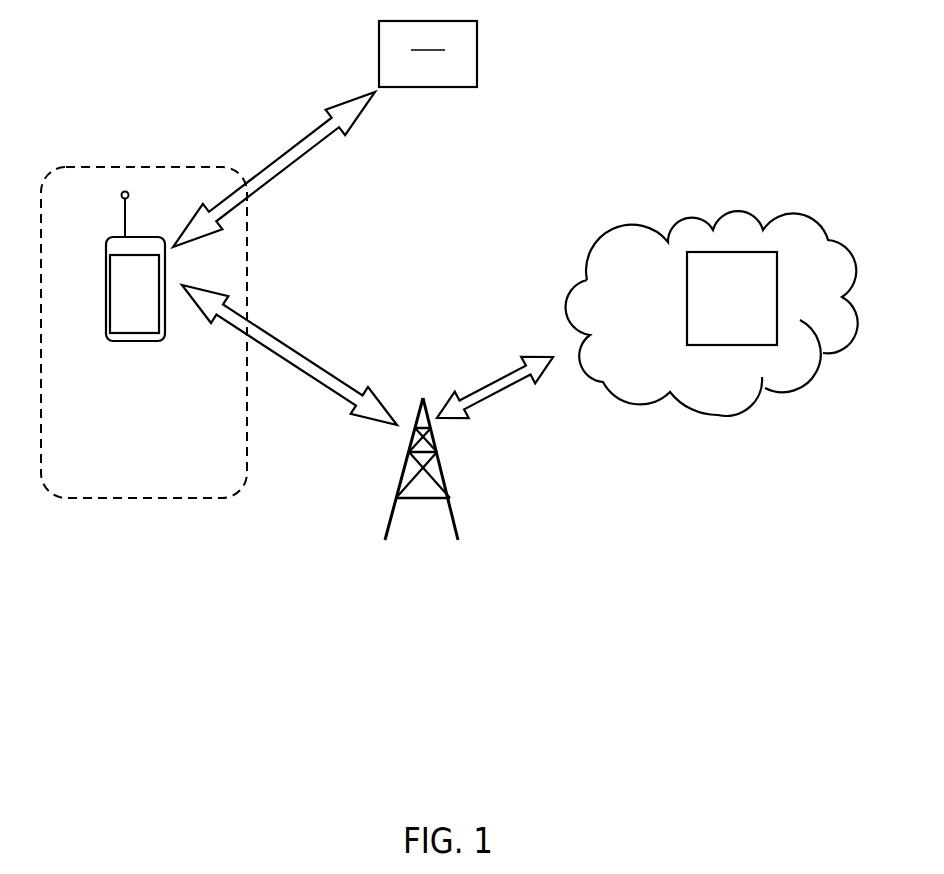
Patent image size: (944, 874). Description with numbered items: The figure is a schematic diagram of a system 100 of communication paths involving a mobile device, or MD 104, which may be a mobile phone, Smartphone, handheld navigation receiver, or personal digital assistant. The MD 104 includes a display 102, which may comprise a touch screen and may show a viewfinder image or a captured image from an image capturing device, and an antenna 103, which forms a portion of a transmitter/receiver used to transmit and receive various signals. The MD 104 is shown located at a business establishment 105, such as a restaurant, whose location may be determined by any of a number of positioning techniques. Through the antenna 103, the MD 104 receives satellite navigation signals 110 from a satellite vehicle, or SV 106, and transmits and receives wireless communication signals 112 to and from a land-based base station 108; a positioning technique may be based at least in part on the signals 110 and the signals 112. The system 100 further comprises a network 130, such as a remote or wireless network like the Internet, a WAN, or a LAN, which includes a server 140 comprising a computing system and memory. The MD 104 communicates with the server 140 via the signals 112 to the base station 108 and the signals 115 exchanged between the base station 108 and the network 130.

The system 100 is at (164, 33).
The display 102 is at (173, 286).
The antenna 103 is at (127, 213).
The mobile device (MD) 104 is at (163, 283).
The business establishment 105 is at (247, 452).
The satellite vehicle (SV) 106 is at (428, 54).
The base station 108 is at (433, 433).
The satellite navigation signals 110 is at (295, 143).
The wireless communication signals 112 is at (285, 340).
The signals 115 is at (485, 362).
The network 130 is at (712, 377).
The server 140 is at (752, 345).